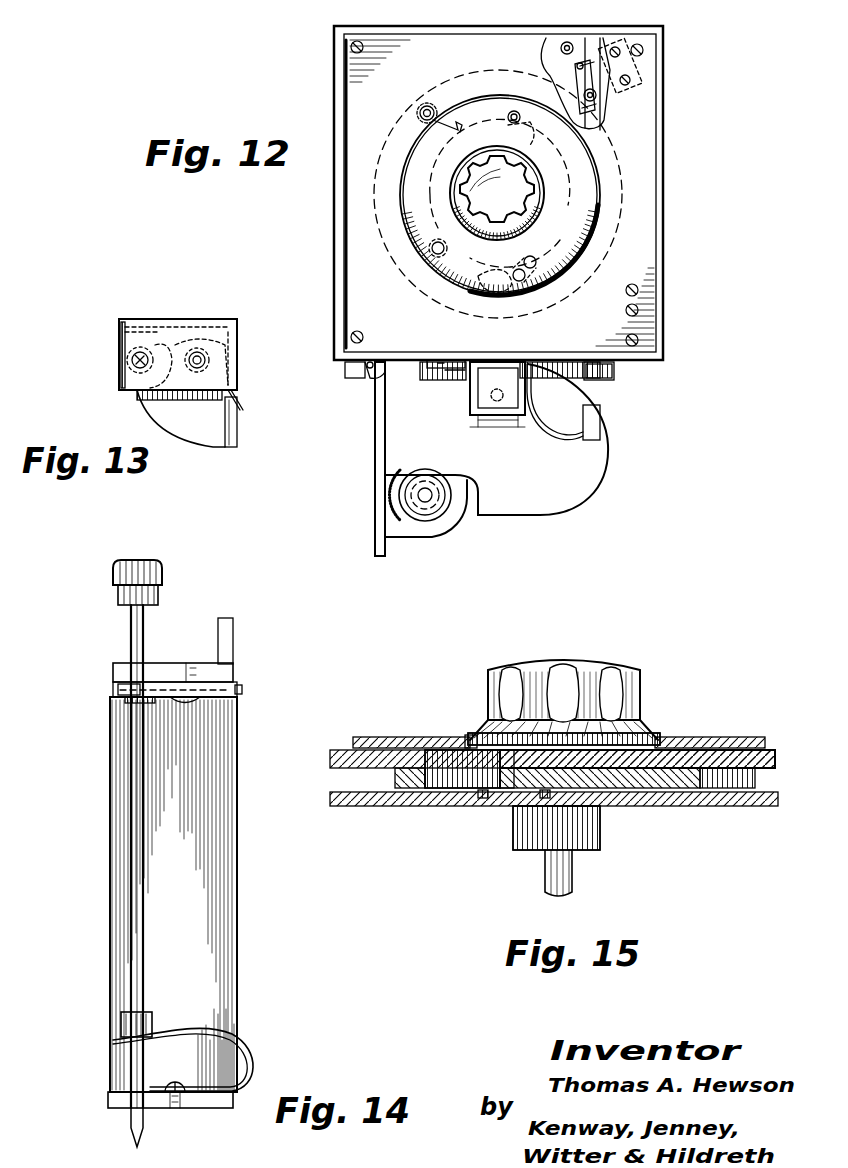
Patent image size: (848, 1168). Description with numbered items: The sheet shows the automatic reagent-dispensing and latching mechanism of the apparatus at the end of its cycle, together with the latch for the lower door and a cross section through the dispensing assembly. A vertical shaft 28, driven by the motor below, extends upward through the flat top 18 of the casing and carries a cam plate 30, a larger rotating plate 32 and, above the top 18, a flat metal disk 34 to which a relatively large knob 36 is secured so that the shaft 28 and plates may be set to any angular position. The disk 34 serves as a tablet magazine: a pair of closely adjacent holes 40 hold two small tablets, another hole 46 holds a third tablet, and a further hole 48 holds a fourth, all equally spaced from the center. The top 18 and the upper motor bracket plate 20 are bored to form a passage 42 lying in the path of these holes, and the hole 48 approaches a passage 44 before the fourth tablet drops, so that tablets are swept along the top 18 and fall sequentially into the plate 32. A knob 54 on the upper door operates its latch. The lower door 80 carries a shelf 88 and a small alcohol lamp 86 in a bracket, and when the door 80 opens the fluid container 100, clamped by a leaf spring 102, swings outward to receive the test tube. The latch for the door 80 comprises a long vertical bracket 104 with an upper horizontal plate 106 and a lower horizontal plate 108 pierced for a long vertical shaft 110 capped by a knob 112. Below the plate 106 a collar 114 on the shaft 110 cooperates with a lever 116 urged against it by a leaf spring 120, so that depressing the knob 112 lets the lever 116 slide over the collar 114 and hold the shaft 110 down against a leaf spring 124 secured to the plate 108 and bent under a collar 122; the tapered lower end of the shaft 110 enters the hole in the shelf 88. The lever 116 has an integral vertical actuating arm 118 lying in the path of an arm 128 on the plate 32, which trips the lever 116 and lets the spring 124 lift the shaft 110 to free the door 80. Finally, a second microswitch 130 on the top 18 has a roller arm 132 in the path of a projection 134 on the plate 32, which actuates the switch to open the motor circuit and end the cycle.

In FIG. 15, the flat top 18 is at (768, 760).
In FIG. 15, the upper plate 20 is at (678, 783).
In FIG. 15, the vertical shaft 28 is at (552, 872).
In FIG. 12, the cam plate 30 is at (540, 165).
In FIG. 12, the plate 32 is at (602, 150).
In FIG. 15, the plate 32 is at (740, 806).
In FIG. 12, the flat metal disk 34 is at (408, 187).
In FIG. 15, the flat metal disk 34 is at (398, 742).
In FIG. 12, the knob 36 is at (497, 193).
In FIG. 15, the knob 36 is at (590, 668).
In FIG. 12, the pair of holes 40 is at (536, 264).
In FIG. 15, the pair of holes 40 is at (458, 740).
In FIG. 15, the passage 42 is at (458, 782).
In FIG. 12, the passage 44 is at (478, 272).
In FIG. 15, the passage 44 is at (486, 792).
In FIG. 12, the hole 46 is at (513, 128).
In FIG. 12, the hole 48 is at (438, 242).
In FIG. 12, the knob 54 is at (612, 370).
In FIG. 12, the lower door 80 is at (375, 498).
In FIG. 12, the alcohol lamp 86 is at (434, 490).
In FIG. 12, the shelf 88 is at (572, 484).
In FIG. 12, the fluid container 100 is at (475, 405).
In FIG. 12, the leaf spring 102 is at (580, 437).
In FIG. 14, the vertical bracket 104 is at (230, 878).
In FIG. 13, the upper horizontal plate 106 is at (205, 310).
In FIG. 14, the upper horizontal plate 106 is at (120, 664).
In FIG. 14, the lower horizontal plate 108 is at (118, 1100).
In FIG. 14, the vertical shaft 110 is at (145, 632).
In FIG. 13, the knob 112 is at (133, 360).
In FIG. 14, the knob 112 is at (165, 573).
In FIG. 13, the collar 114 is at (127, 348).
In FIG. 14, the collar 114 is at (128, 700).
In FIG. 13, the lever 116 is at (203, 437).
In FIG. 14, the lever 116 is at (118, 689).
In FIG. 13, the actuating arm 118 is at (237, 435).
In FIG. 14, the actuating arm 118 is at (234, 644).
In FIG. 13, the leaf spring 120 is at (242, 406).
In FIG. 14, the leaf spring 120 is at (243, 689).
In FIG. 14, the collar 122 is at (121, 1025).
In FIG. 14, the leaf spring 124 is at (250, 1055).
In FIG. 12, the arm 128 is at (447, 118).
In FIG. 12, the second microswitch 130 is at (598, 62).
In FIG. 12, the roller arm 132 is at (575, 86).
In FIG. 12, the projection 134 is at (603, 101).